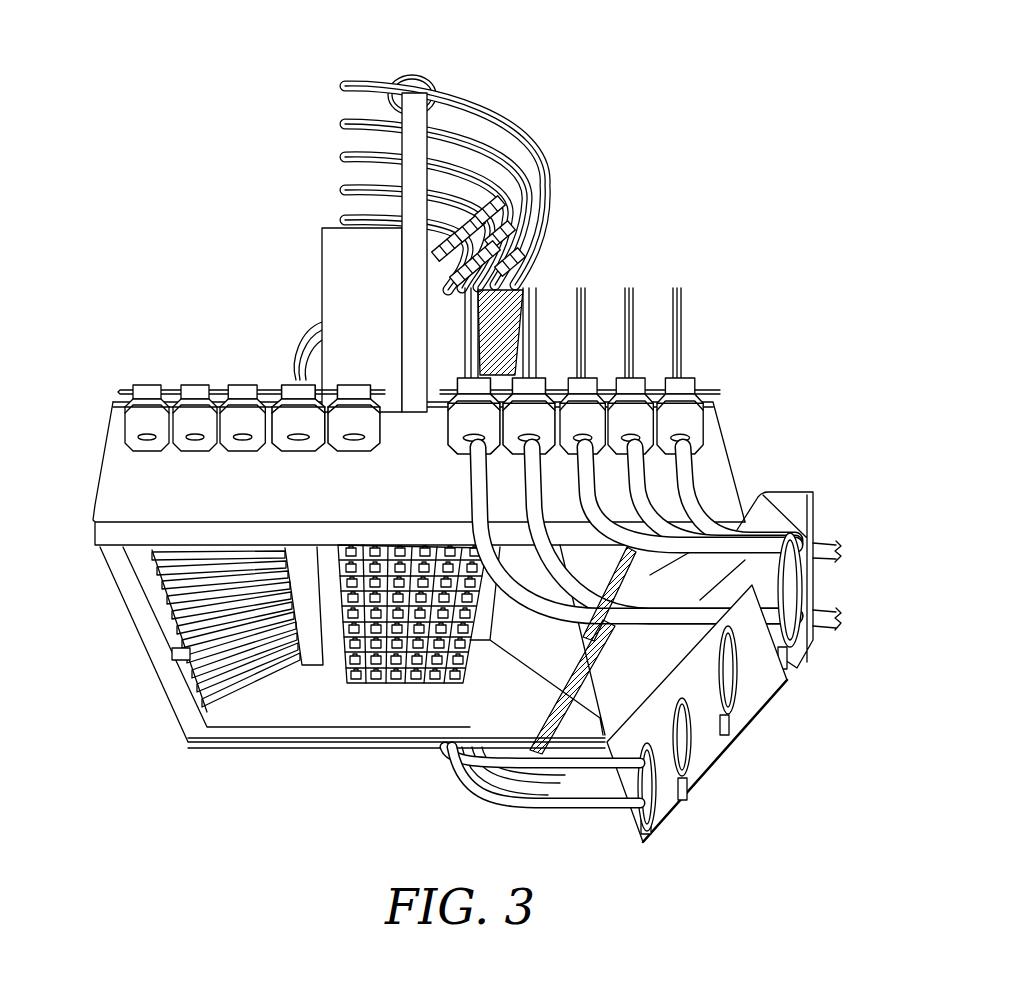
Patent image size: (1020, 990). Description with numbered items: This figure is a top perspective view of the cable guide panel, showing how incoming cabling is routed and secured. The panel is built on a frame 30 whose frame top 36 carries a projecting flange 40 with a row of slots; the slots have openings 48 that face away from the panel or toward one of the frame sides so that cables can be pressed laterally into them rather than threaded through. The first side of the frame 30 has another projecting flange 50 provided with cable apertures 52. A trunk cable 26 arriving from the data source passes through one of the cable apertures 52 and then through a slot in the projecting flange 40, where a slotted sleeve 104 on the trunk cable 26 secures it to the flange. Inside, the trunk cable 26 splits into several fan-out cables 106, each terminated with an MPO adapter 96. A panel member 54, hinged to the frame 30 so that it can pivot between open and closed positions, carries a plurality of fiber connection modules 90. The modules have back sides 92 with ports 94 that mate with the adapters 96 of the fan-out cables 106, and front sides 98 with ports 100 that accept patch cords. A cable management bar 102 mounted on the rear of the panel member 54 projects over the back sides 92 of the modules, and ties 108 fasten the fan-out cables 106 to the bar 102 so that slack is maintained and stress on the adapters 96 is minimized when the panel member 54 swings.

The trunk cable 26 is at (826, 622).
The frame 30 is at (228, 742).
The frame top 36 is at (148, 490).
The projecting flange 40 is at (700, 388).
The openings 48 is at (200, 393).
The projecting flange 50 is at (813, 515).
The cable apertures 52 is at (790, 592).
The panel member 54 is at (326, 668).
The fiber connection modules 90 is at (355, 282).
The back sides 92 is at (333, 228).
The ports 94 is at (477, 270).
The MPO adapters 96 is at (530, 273).
The front sides 98 is at (483, 650).
The ports 100 is at (373, 687).
The cable management bar 102 is at (412, 132).
The slotted sleeves 104 is at (245, 415).
The fan-out cables 106 is at (540, 185).
The ties 108 is at (412, 85).